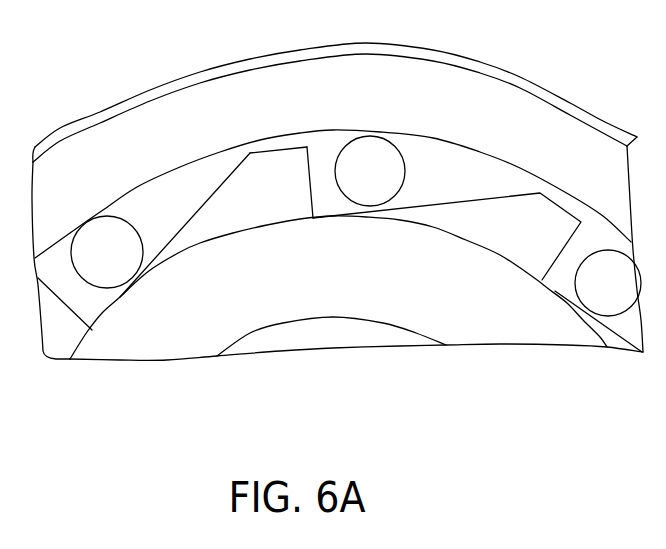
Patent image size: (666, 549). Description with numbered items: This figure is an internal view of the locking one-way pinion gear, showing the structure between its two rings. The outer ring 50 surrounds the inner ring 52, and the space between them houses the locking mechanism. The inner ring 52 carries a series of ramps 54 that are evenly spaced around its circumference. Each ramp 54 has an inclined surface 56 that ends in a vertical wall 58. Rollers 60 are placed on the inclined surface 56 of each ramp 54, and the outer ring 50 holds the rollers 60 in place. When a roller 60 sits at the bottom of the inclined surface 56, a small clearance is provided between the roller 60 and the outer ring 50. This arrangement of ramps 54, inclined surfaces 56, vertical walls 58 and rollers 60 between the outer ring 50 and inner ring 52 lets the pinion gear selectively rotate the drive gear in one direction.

The outer ring 50 is at (540, 101).
The inner ring 52 is at (525, 322).
The ramp 54 is at (282, 202).
The inclined surface 56 is at (200, 207).
The vertical wall 58 is at (314, 188).
The roller 60 is at (385, 153).